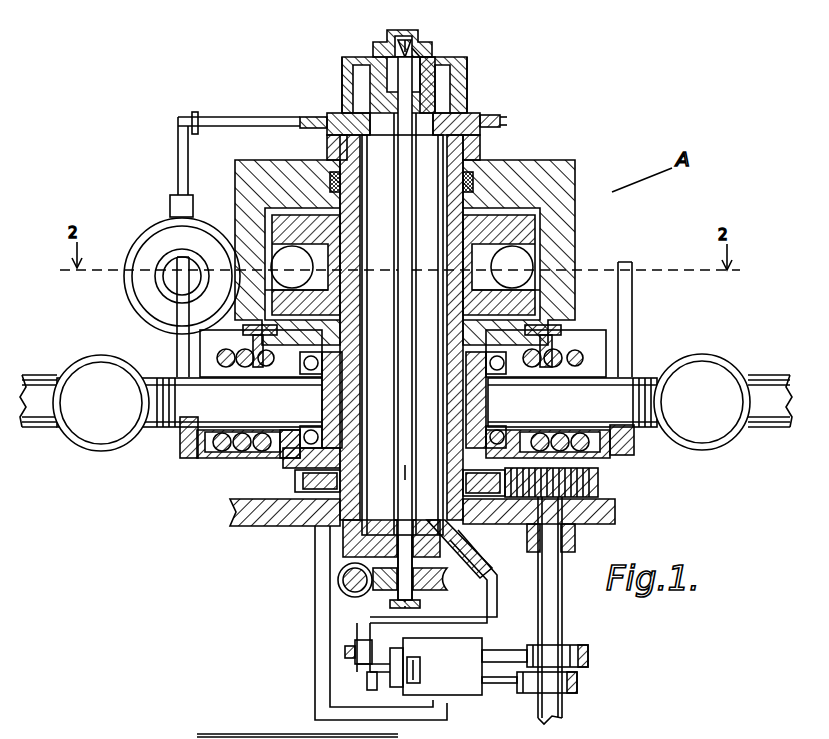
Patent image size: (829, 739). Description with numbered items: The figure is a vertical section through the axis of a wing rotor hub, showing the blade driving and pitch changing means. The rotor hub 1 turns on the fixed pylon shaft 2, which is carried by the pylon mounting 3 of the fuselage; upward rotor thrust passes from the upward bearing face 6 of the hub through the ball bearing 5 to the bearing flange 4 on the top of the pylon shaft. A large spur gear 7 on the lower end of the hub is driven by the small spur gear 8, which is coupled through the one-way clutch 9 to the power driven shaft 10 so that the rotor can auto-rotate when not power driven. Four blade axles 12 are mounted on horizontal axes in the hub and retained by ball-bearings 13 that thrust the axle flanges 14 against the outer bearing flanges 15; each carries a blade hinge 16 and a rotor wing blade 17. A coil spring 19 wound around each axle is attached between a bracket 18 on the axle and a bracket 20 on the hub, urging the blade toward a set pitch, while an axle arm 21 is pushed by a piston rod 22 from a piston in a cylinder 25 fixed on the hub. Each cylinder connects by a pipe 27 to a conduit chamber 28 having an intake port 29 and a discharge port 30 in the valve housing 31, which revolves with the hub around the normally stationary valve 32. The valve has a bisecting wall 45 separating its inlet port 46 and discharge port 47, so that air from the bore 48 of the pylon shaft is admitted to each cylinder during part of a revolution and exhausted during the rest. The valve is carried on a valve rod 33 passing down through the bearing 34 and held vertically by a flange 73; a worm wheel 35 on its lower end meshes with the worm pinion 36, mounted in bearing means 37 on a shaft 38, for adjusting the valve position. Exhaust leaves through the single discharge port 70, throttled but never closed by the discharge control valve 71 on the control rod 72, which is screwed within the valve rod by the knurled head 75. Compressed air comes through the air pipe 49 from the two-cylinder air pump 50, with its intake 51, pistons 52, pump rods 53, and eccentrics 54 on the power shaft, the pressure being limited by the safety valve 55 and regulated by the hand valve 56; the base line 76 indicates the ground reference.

The rotor hub 1 is at (575, 177).
The fixed pylon shaft 2 is at (360, 415).
The pylon mounting 3 is at (230, 514).
The bearing flange 4 is at (538, 234).
The ball bearing 5 is at (516, 268).
The upward bearing face 6 is at (542, 300).
The large spur gear 7 is at (296, 482).
The small spur gear 8 is at (614, 508).
The one-way clutch 9 is at (600, 472).
The power driven shaft 10 is at (563, 596).
The blade axle 12 is at (357, 402).
The ball-bearing 13 is at (290, 456).
The axle flange 14 is at (322, 394).
The outer bearing flange 15 is at (282, 440).
The blade hinge 16 is at (103, 425).
The rotor wing blade 17 is at (38, 368).
The bracket 18 is at (188, 458).
The coil spring 19 is at (220, 360).
The bracket 20 is at (246, 330).
The axle arm 21 is at (177, 348).
The piston rod 22 is at (162, 282).
The cylinder 25 is at (150, 238).
The pipe 27 is at (185, 160).
The conduit chamber 28 is at (358, 100).
The intake port 29 is at (330, 148).
The discharge port 30 is at (342, 77).
The valve housing 31 is at (469, 64).
The valve 32 is at (416, 328).
The valve rod 33 is at (416, 502).
The bearing 34 is at (428, 505).
The worm wheel 35 is at (432, 568).
The worm pinion 36 is at (338, 573).
The bearing means 37 is at (330, 600).
The shaft 38 is at (344, 582).
The bisecting wall 45 is at (436, 62).
The inlet port 46 is at (480, 148).
The discharge port 47 is at (342, 60).
The bore 48 is at (414, 324).
The air pipe 49 is at (500, 618).
The two-cylinder air pump 50 is at (462, 696).
The intake 51 is at (422, 668).
The piston 52 is at (496, 650).
The pump rod 53 is at (590, 654).
The eccentric 54 is at (572, 645).
The safety valve 55 is at (367, 682).
The hand valve 56 is at (345, 652).
The discharge port 70 is at (394, 34).
The discharge control valve 71 is at (414, 48).
The control rod 72 is at (440, 62).
The flange 73 is at (428, 472).
The knurled head 75 is at (390, 605).
The base line 76 is at (288, 735).